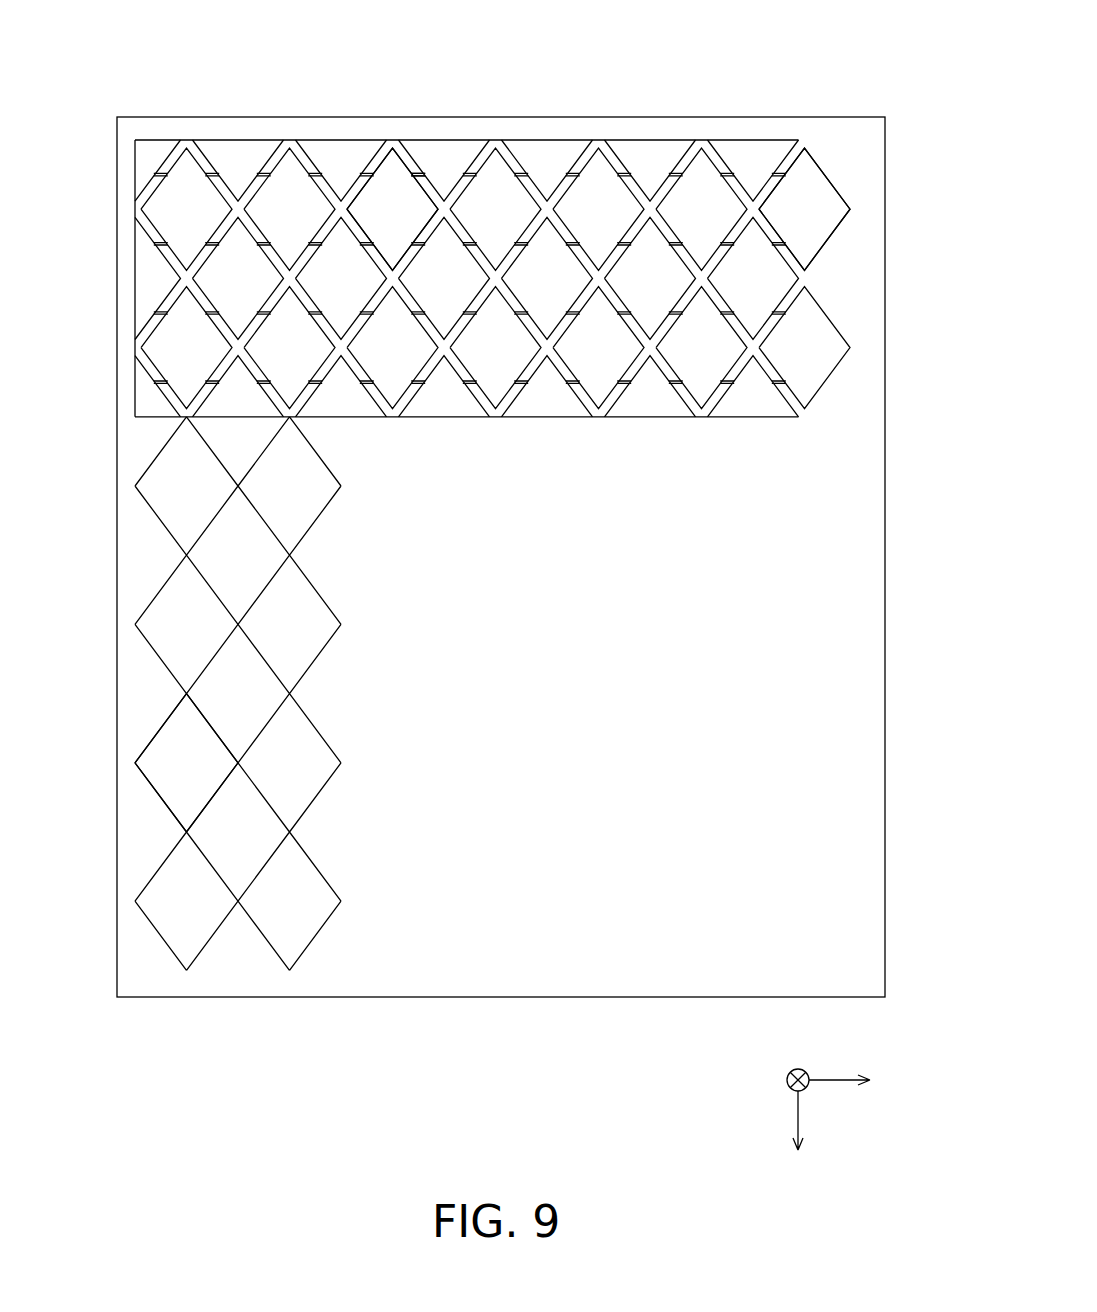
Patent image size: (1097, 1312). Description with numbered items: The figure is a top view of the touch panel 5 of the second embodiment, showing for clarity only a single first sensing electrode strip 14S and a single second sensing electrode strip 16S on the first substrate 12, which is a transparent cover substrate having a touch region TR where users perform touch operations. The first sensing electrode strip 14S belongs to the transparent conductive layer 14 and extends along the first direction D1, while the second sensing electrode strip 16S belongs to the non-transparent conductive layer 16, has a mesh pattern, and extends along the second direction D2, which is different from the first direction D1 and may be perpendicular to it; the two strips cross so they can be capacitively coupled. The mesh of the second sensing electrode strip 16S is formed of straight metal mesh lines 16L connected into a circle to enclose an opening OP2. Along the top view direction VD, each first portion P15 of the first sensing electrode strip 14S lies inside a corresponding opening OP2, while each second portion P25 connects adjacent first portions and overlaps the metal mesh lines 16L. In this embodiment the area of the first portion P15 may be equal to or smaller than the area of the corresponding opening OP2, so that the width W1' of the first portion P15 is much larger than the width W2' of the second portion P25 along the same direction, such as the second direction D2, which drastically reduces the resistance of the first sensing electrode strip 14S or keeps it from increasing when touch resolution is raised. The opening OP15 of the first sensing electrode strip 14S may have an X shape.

The touch panel 5 is at (813, 92).
The first substrate 12 is at (838, 622).
The transparent conductive layer 14 is at (545, 618).
The first sensing electrode strip 14S is at (842, 276).
The non-transparent conductive layer 16 is at (539, 224).
The second sensing electrode strip 16S is at (539, 224).
The metal mesh line 16L is at (306, 163).
The first portion P15 is at (388, 188).
The second portion P25 is at (420, 176).
The width of second portion W2' is at (520, 133).
The width of first portion W1' is at (598, 167).
The opening of first sensing electrode strip OP15 is at (663, 185).
The opening of mesh unit OP2 is at (179, 754).
The touch region TR is at (865, 150).
The top view direction VD is at (794, 1067).
The first direction D1 is at (858, 1085).
The second direction D2 is at (793, 1137).